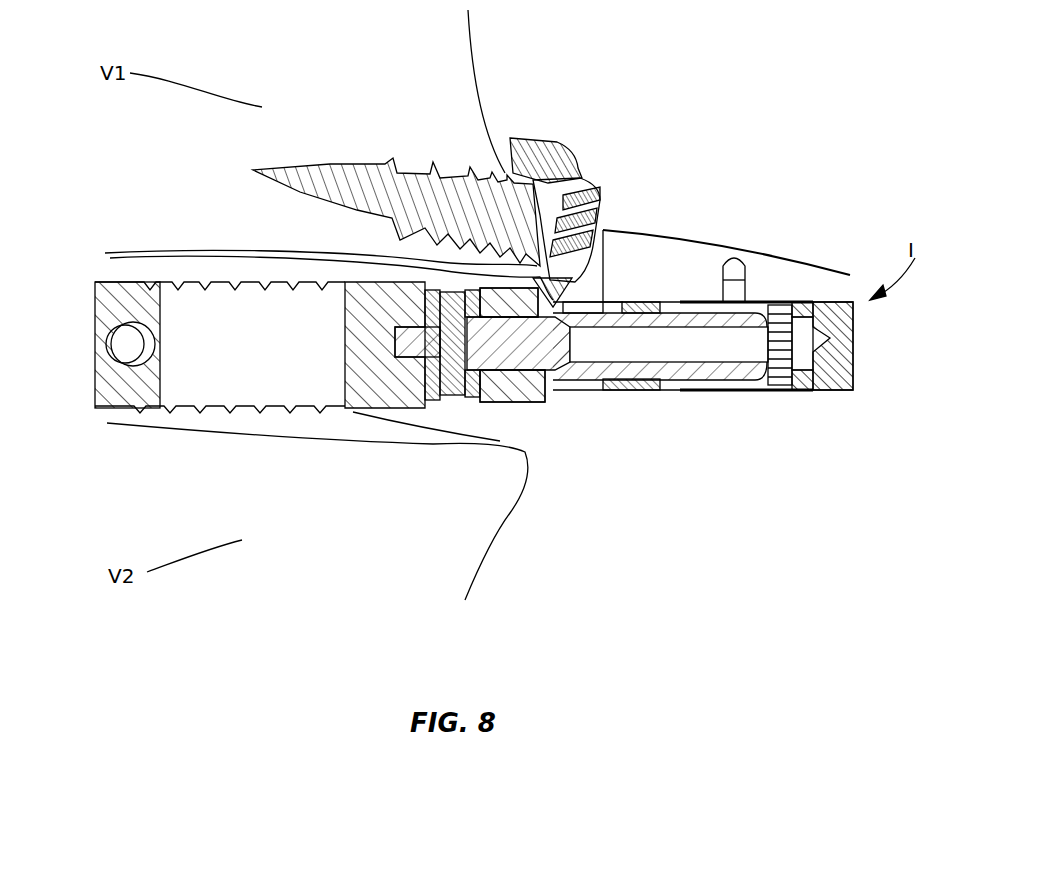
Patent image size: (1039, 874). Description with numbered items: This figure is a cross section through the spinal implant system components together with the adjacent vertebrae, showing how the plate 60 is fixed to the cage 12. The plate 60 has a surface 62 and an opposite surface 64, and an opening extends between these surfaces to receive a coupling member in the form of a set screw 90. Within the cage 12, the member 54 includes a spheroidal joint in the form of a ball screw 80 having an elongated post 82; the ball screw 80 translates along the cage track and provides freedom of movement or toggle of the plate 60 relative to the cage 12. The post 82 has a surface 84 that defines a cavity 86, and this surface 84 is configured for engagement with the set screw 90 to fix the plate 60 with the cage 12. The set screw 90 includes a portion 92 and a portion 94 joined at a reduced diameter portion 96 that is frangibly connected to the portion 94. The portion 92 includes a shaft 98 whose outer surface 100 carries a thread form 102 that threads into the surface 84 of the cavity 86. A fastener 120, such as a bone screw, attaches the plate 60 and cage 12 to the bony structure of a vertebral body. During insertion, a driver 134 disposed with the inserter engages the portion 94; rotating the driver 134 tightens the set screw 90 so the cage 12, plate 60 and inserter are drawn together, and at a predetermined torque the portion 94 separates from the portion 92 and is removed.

The cage 12 is at (112, 308).
The member 54 is at (440, 363).
The plate 60 is at (573, 168).
The surface 62 is at (530, 342).
The surface 64 is at (580, 172).
The ball screw 80 is at (533, 395).
The elongated post 82 is at (527, 390).
The surface 84 is at (543, 397).
The cavity 86 is at (578, 395).
The set screw 90 is at (717, 368).
The portion 92 is at (605, 262).
The portion 94 is at (695, 320).
The reduced diameter portion 96 is at (623, 307).
The shaft 98 is at (512, 392).
The outer surface 100 is at (495, 393).
The thread form 102 is at (470, 392).
The fastener 120 is at (600, 190).
The driver 134 is at (833, 390).